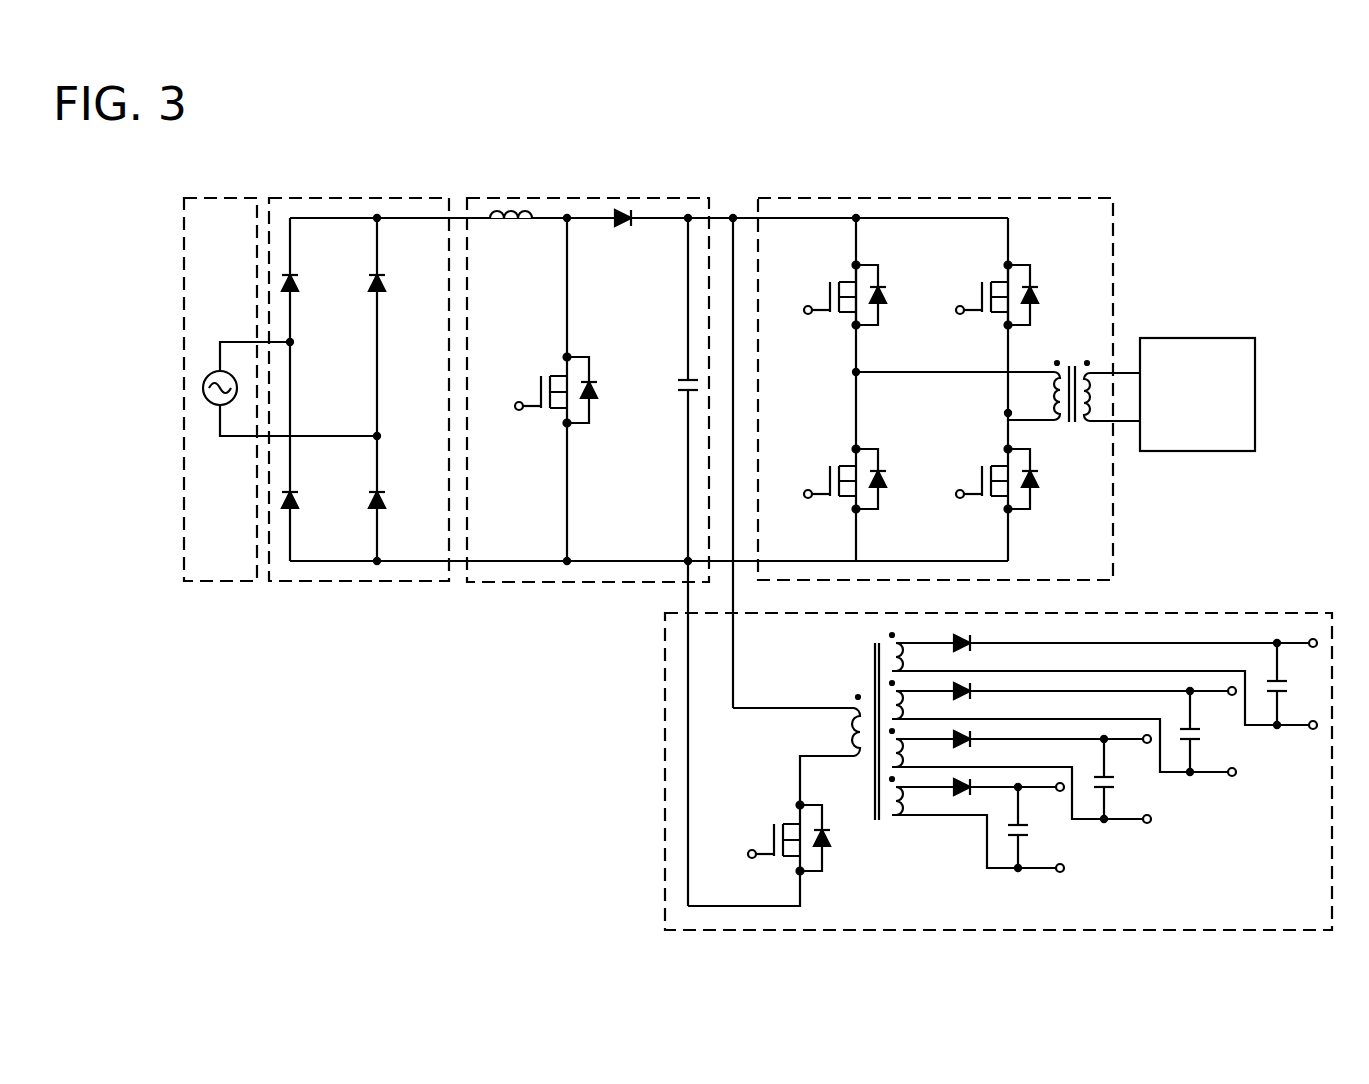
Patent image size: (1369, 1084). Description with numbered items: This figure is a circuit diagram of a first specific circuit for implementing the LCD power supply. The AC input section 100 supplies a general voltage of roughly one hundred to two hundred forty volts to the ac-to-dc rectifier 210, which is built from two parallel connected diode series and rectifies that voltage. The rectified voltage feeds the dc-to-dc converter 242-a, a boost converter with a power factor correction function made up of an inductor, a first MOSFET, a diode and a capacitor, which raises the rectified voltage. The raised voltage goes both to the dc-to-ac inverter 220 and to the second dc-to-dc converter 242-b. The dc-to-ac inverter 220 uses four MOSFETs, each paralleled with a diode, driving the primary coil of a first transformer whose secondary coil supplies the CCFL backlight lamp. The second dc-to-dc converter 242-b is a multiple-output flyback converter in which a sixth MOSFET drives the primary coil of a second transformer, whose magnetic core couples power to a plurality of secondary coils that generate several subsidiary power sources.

The AC input section 100 is at (220, 198).
The ac-to-dc rectifier 210 is at (358, 198).
The dc-to-dc converter 242-a is at (588, 198).
The dc-to-ac inverter 220 is at (935, 198).
The second dc-to-dc converter 242-b is at (1238, 613).